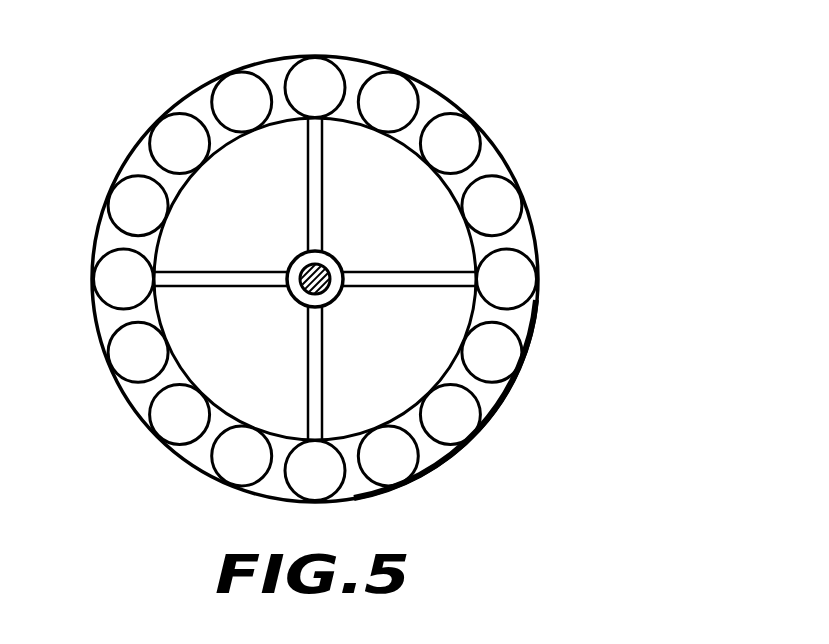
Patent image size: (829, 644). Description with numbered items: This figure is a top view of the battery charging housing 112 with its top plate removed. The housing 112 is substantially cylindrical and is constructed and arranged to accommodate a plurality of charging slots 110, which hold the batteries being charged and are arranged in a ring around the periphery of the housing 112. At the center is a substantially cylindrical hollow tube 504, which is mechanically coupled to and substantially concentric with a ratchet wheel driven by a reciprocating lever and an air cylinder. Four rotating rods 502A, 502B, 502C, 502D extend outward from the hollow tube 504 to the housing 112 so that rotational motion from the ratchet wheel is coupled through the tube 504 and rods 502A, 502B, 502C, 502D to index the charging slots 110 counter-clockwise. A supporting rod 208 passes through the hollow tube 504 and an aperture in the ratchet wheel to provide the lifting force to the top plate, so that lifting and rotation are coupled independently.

The battery charging housing 112 is at (494, 39).
The charging slots 110 is at (465, 128).
The rotating rod 502A is at (318, 377).
The rotating rod 502B is at (188, 271).
The rotating rod 502C is at (340, 156).
The rotating rod 502D is at (448, 288).
The hollow tube 504 is at (331, 256).
The supporting rod 208 is at (311, 266).